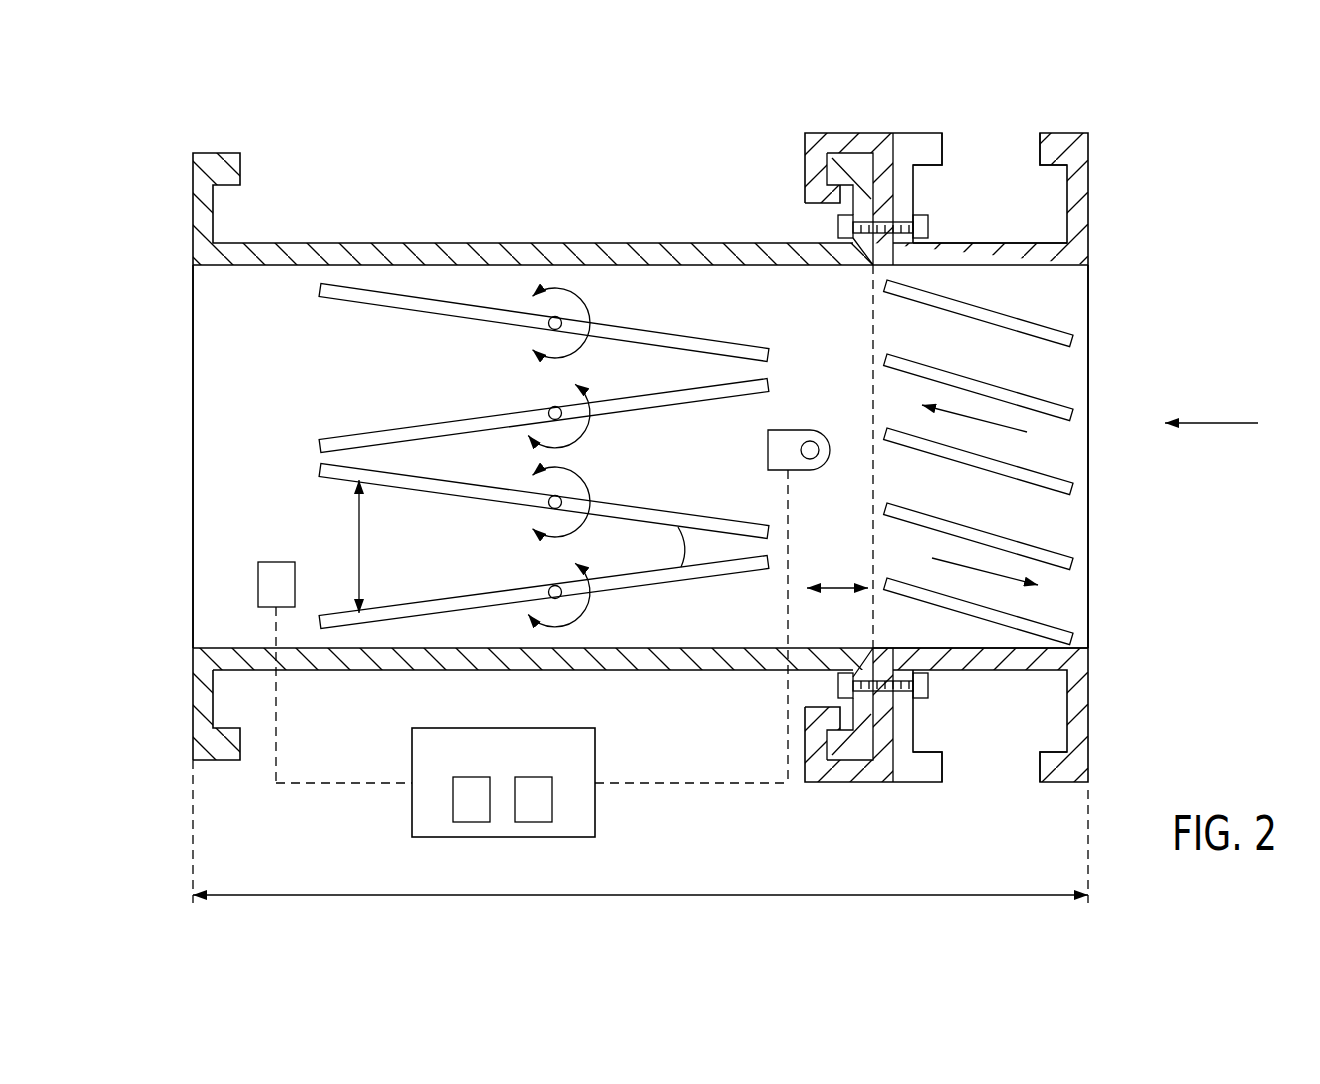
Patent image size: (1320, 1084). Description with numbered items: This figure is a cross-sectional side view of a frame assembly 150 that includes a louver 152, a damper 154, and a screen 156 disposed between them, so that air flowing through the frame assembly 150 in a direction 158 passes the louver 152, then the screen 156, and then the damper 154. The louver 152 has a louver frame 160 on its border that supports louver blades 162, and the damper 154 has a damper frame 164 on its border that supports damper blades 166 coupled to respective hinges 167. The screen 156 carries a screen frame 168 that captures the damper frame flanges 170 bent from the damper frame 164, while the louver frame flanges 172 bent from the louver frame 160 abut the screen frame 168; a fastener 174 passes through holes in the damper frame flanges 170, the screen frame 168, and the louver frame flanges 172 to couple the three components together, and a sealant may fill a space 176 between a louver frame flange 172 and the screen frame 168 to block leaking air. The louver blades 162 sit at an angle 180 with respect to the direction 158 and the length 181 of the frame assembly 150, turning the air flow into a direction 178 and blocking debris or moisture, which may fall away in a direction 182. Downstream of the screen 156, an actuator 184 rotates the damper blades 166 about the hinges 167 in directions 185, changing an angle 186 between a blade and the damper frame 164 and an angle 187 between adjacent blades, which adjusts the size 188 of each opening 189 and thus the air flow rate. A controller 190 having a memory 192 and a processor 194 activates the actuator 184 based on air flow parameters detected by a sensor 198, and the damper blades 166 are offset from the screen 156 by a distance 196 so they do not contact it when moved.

The frame assembly 150 is at (1217, 225).
The louver 152 is at (1090, 308).
The damper 154 is at (192, 327).
The screen 156 is at (875, 608).
The direction 158 is at (1220, 425).
The louver frame 160 is at (1003, 165).
The louver blades 162 is at (1047, 335).
The damper frame 164 is at (533, 148).
The damper blades 166 is at (433, 422).
The hinges 167 is at (549, 406).
The screen frame 168 is at (813, 153).
The damper frame flanges 170 is at (213, 173).
The louver frame flanges 172 is at (922, 147).
The fastener 174 is at (838, 225).
The space 176 is at (893, 135).
The direction 178 is at (1003, 428).
The angle 180 is at (1022, 648).
The length 181 is at (643, 895).
The direction 182 is at (978, 567).
The actuator 184 is at (790, 430).
The directions 185 is at (584, 308).
The angle 186 is at (372, 282).
The angle 187 is at (673, 547).
The size 188 is at (358, 545).
The opening 189 is at (737, 298).
The controller 190 is at (503, 728).
The memory 192 is at (473, 838).
The processor 194 is at (532, 838).
The distance 196 is at (838, 592).
The sensors 198 is at (257, 582).